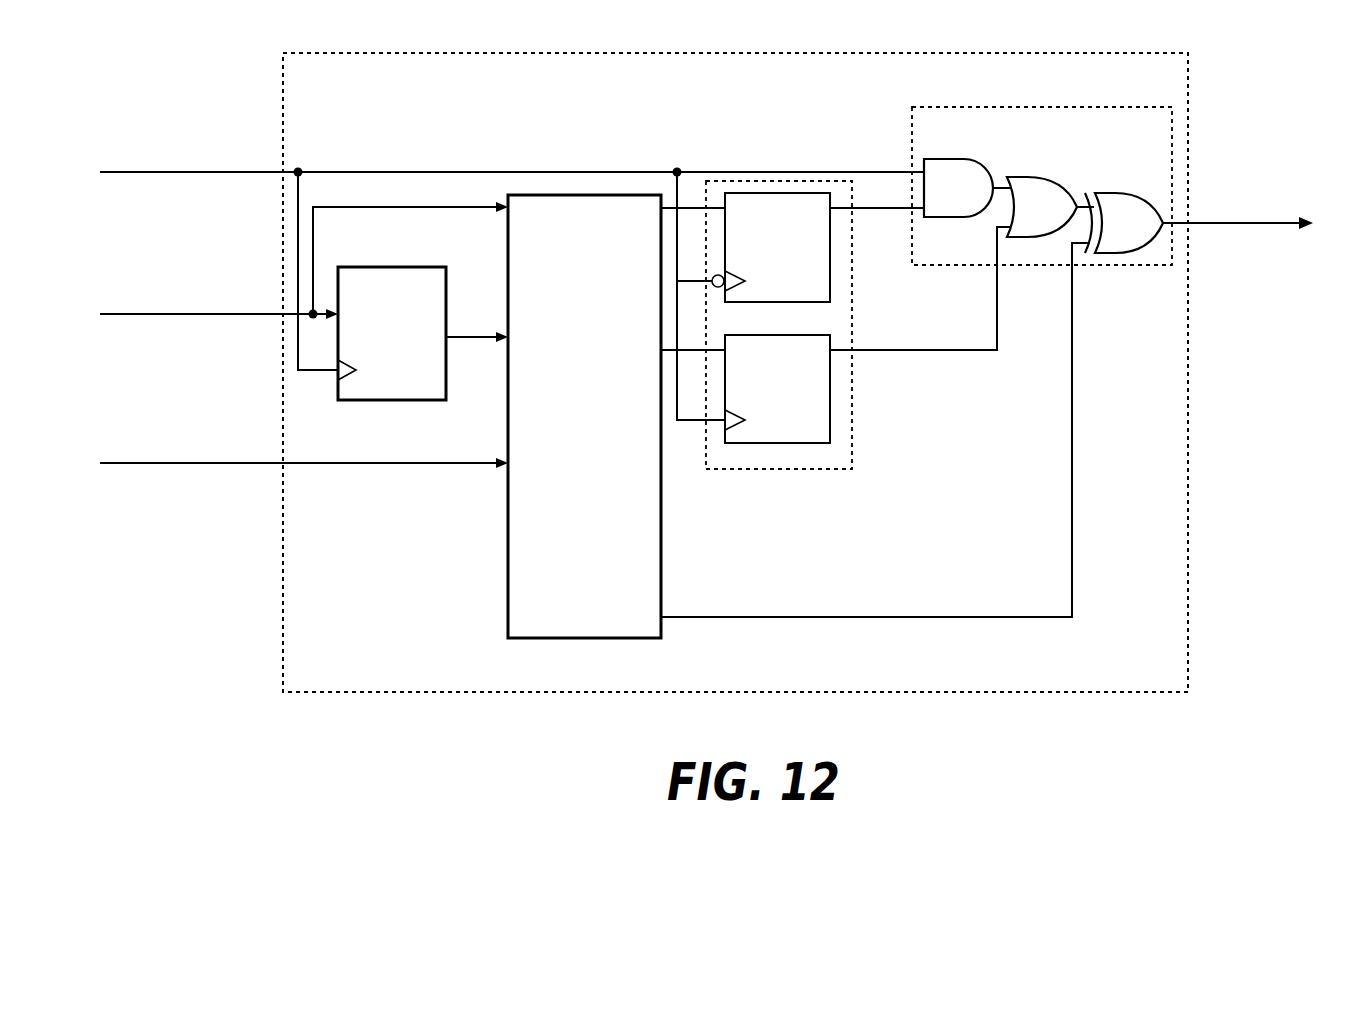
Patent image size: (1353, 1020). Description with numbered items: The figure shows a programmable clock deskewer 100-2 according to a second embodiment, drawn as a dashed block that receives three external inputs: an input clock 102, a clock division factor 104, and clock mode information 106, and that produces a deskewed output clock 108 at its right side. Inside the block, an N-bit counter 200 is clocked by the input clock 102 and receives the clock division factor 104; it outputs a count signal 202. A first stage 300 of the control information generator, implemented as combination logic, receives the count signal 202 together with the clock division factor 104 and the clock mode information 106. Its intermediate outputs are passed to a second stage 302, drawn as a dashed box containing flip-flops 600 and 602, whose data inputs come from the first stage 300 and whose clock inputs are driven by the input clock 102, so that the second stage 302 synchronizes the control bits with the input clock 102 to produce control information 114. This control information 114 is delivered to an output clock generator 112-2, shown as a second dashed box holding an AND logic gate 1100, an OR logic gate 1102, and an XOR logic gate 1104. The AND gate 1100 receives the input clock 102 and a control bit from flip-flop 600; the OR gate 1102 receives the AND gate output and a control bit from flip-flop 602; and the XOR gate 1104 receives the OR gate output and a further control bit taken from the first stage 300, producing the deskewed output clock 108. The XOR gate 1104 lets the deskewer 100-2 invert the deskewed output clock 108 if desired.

The programmable clock deskewer 100-2 is at (380, 697).
The input clock 102 is at (262, 150).
The clock division factor 104 is at (236, 312).
The clock mode information 106 is at (262, 462).
The deskewed output clock 108 is at (1257, 252).
The output clock generator 112-2 is at (945, 166).
The control information 114 is at (888, 211).
The counter 200 is at (396, 402).
The count signal 202 is at (468, 332).
The first stage 300 is at (583, 640).
The second stage 302 is at (849, 376).
The flip-flop 600 is at (757, 304).
The flip-flop 602 is at (769, 444).
The AND logic gate 1100 is at (957, 159).
The OR logic gate 1102 is at (1034, 177).
The XOR logic gate 1104 is at (1116, 193).